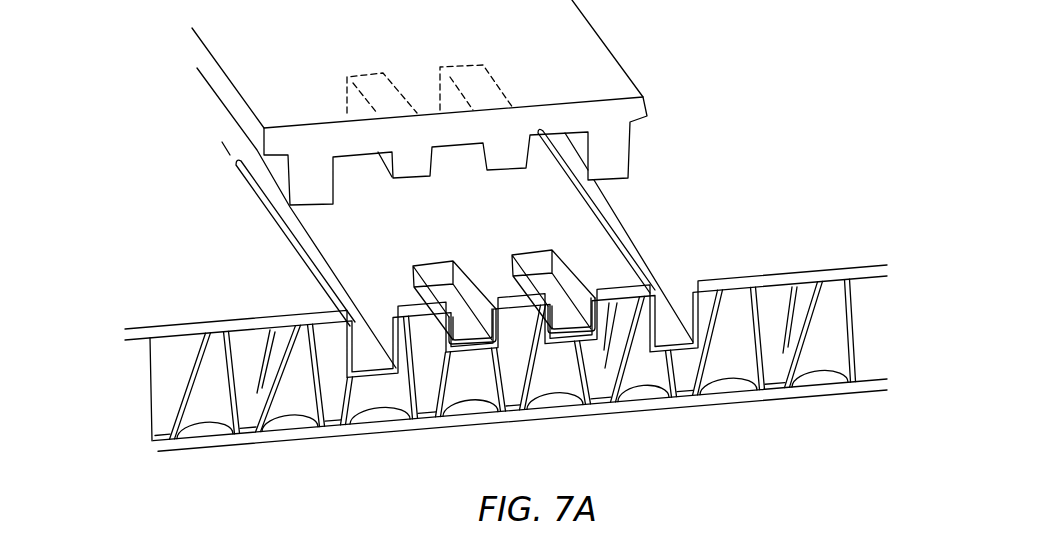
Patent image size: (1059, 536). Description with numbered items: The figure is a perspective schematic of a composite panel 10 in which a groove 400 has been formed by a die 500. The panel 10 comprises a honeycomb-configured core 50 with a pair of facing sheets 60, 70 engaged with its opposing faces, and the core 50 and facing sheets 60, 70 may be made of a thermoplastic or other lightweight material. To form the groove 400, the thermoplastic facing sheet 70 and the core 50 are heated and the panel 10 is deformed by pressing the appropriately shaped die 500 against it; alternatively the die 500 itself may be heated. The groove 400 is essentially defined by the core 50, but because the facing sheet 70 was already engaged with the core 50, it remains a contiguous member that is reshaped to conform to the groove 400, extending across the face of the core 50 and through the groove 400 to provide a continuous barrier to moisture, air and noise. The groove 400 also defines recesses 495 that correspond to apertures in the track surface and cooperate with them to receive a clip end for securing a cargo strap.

The composite panel 10 is at (135, 233).
The core 50 is at (210, 378).
The facing sheet 60 is at (219, 446).
The facing sheet 70 is at (213, 325).
The groove 400 is at (320, 252).
The recess 495 is at (453, 297).
The die 500 is at (648, 106).